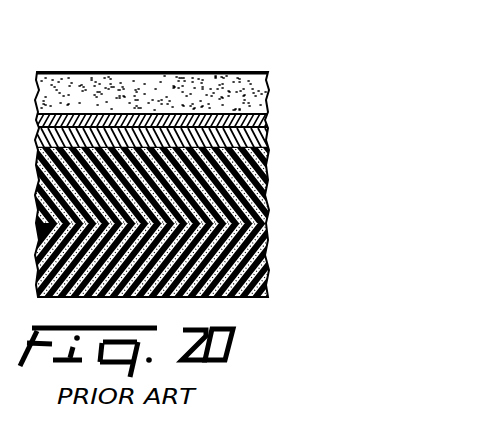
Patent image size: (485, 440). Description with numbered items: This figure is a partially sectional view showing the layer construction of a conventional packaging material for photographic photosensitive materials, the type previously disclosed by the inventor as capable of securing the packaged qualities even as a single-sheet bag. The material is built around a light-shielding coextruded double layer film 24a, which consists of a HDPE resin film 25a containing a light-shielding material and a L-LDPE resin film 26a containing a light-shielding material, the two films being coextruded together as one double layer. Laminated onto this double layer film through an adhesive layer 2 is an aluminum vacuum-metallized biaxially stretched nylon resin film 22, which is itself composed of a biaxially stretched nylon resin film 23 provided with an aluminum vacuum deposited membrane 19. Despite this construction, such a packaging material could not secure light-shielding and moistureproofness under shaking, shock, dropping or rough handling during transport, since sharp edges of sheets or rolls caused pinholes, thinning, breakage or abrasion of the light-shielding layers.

The biaxially stretched nylon resin film 23 is at (266, 90).
The aluminum vacuum deposited membrane 19 is at (166, 116).
The adhesive layer 2 is at (268, 147).
The aluminum vacuum-metallized biaxially stretched nylon resin film 22 is at (193, 98).
The HDPE resin film 25a is at (266, 192).
The L-LDPE resin film 26a is at (268, 258).
The light-shielding coextruded double layer film 24a is at (191, 223).